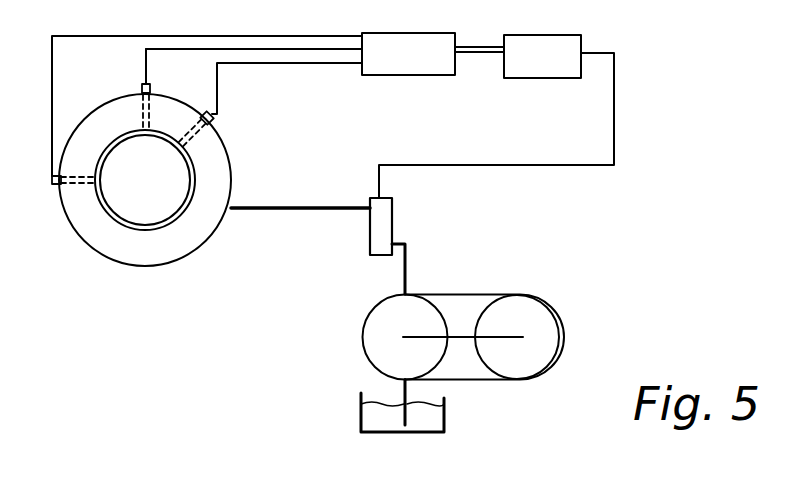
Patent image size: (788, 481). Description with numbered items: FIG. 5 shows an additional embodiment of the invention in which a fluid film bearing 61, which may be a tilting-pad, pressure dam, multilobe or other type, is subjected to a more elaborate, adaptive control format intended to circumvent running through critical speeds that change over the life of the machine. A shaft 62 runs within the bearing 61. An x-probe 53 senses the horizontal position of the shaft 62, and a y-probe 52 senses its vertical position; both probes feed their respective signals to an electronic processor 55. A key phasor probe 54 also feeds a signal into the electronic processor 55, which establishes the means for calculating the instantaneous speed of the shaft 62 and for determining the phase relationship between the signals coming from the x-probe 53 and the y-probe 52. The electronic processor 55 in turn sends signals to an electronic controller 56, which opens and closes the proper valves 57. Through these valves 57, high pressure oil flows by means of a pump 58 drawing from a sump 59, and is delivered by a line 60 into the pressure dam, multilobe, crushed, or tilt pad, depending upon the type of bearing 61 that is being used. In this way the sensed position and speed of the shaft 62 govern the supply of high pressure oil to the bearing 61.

The y-probe 52 is at (142, 86).
The x-probe 53 is at (57, 185).
The key phasor probe 54 is at (220, 120).
The electronic processor 55 is at (425, 20).
The electronic controller 56 is at (556, 20).
The valves 57 is at (385, 218).
The pump 58 is at (415, 297).
The sump 59 is at (372, 418).
The line 60 is at (234, 205).
The fluid film bearing 61 is at (158, 256).
The shaft 62 is at (158, 179).